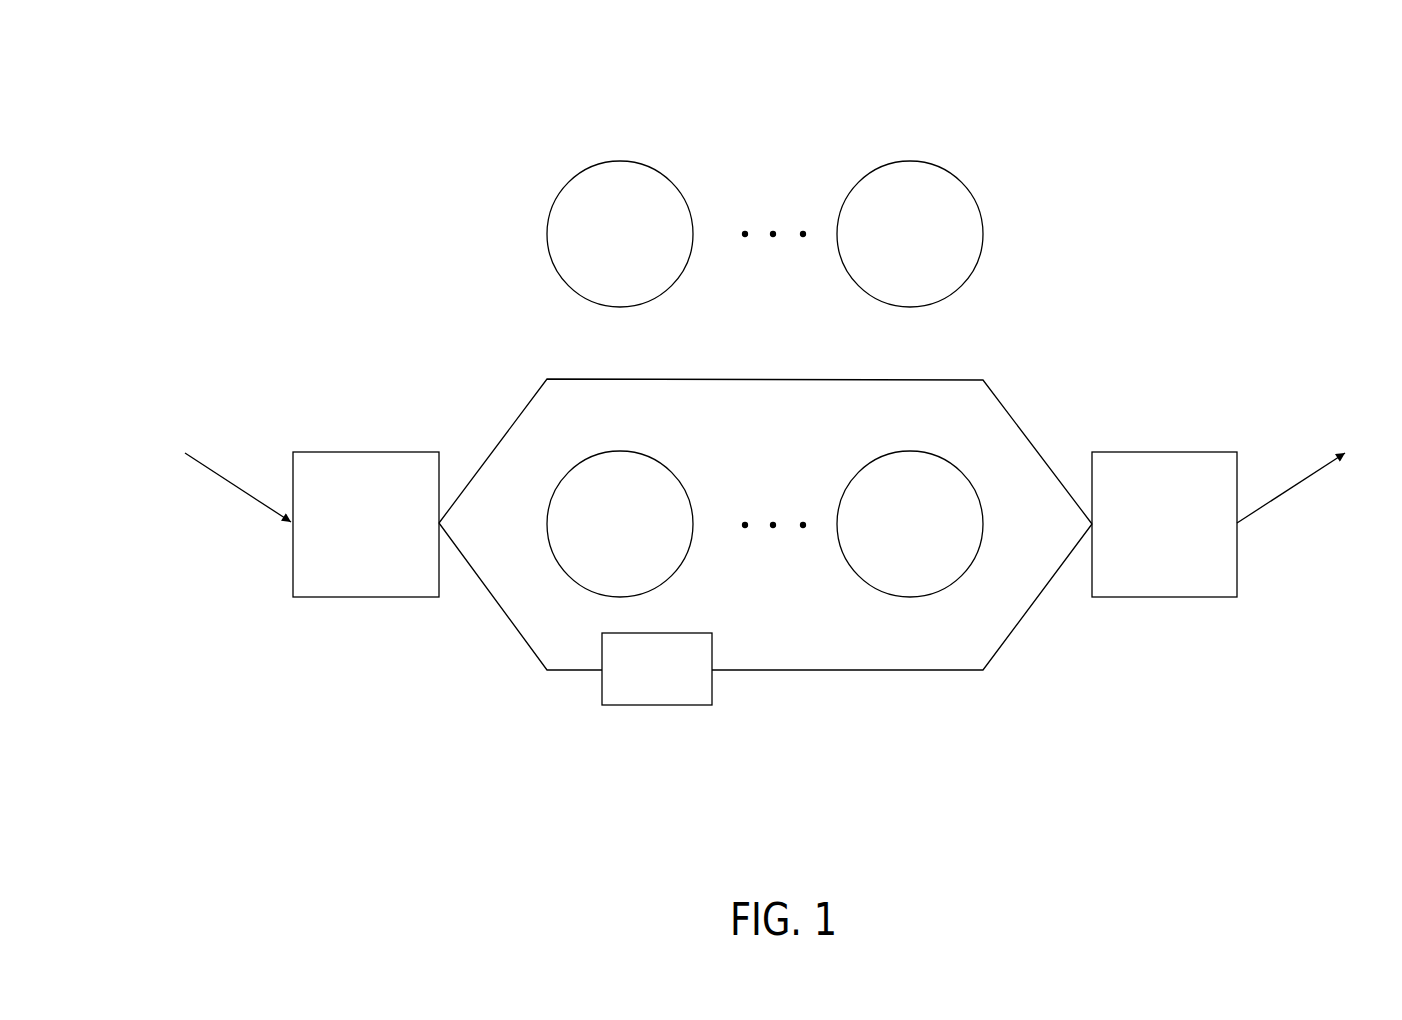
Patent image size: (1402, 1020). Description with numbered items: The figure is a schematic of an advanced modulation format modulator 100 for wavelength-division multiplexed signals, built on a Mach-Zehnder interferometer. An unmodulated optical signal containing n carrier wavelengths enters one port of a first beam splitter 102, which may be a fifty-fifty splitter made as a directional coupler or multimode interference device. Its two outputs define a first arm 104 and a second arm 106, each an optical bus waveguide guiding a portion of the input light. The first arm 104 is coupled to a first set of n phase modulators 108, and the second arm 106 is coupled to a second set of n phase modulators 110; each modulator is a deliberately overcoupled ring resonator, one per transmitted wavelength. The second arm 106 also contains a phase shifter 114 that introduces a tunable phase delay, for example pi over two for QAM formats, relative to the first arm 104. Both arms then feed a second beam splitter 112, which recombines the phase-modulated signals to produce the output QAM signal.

The advanced modulation format modulator 100 is at (148, 44).
The first beam splitter 102 is at (349, 537).
The first arm 104 is at (492, 412).
The second arm 106 is at (492, 636).
The first set of phase modulators 108 is at (645, 255).
The second set of phase modulators 110 is at (645, 546).
The second beam splitter 112 is at (1147, 537).
The phase shifter 114 is at (640, 681).